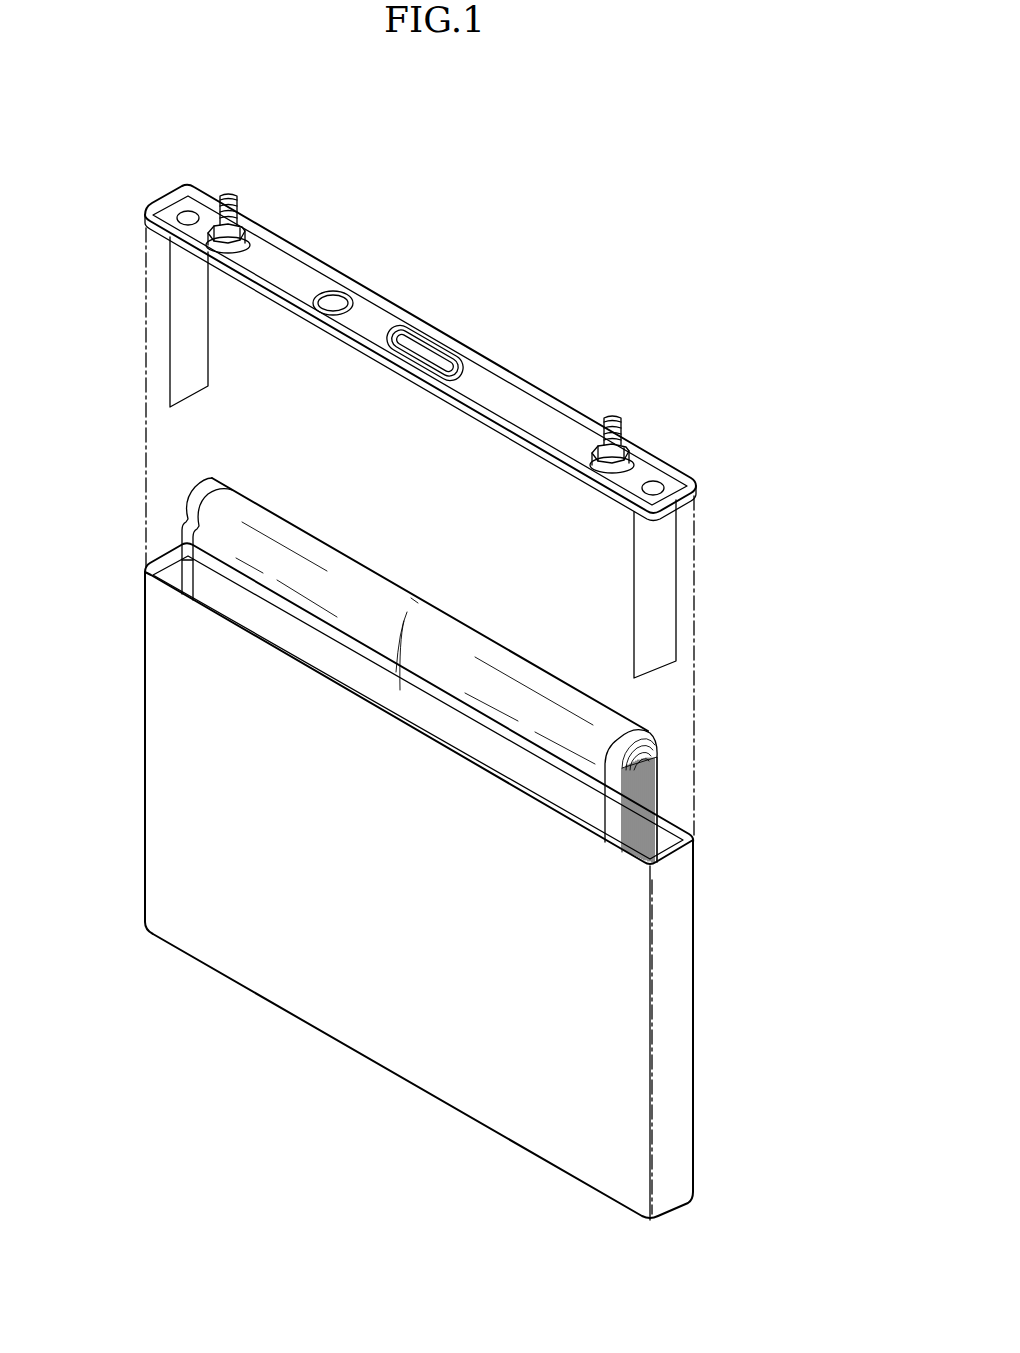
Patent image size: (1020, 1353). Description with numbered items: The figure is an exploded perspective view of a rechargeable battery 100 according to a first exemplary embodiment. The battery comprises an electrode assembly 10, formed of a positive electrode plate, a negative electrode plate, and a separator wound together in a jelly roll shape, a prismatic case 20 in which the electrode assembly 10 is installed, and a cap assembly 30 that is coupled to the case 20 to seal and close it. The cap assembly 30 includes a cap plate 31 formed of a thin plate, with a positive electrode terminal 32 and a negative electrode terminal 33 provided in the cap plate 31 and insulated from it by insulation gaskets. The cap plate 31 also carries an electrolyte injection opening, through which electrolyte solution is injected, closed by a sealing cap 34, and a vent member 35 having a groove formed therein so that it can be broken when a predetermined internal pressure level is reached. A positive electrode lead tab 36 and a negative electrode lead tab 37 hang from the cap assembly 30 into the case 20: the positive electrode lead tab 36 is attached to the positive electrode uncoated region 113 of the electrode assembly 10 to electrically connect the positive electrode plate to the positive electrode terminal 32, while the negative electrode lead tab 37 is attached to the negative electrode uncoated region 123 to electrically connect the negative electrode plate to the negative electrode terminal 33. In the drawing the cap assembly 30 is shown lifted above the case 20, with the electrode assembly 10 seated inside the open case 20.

The rechargeable battery 100 is at (440, 93).
The electrode assembly 10 is at (483, 670).
The positive electrode uncoated region 113 is at (190, 565).
The negative electrode uncoated region 123 is at (614, 800).
The case 20 is at (683, 992).
The cap assembly 30 is at (426, 483).
The cap plate 31 is at (283, 260).
The positive electrode terminal 32 is at (223, 195).
The negative electrode terminal 33 is at (614, 417).
The sealing cap 34 is at (343, 290).
The vent member 35 is at (425, 340).
The positive electrode lead tab 36 is at (185, 331).
The negative electrode lead tab 37 is at (668, 597).